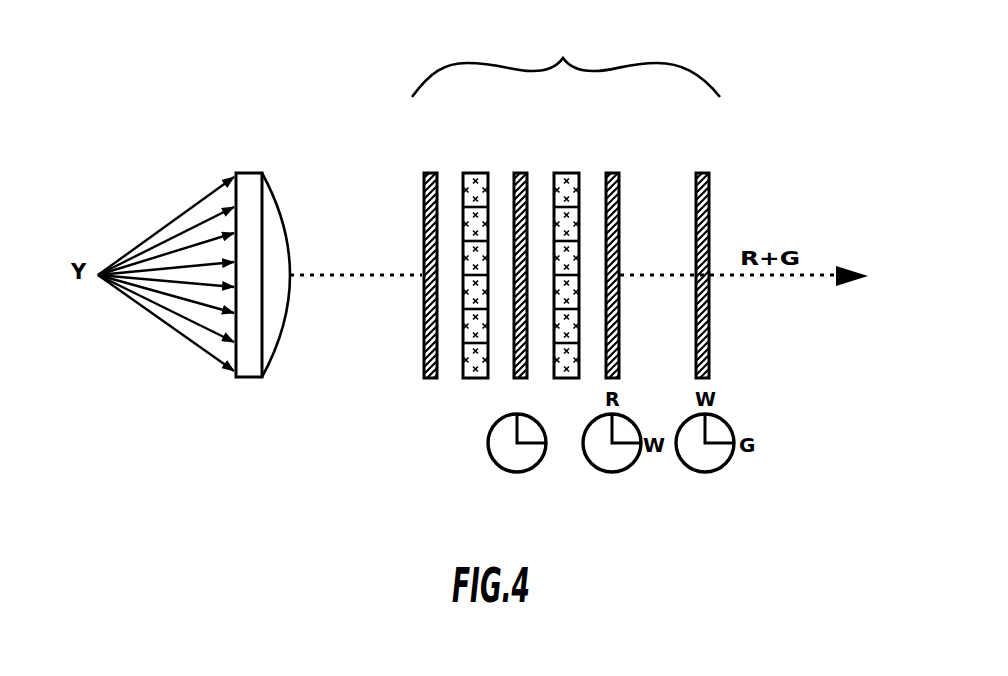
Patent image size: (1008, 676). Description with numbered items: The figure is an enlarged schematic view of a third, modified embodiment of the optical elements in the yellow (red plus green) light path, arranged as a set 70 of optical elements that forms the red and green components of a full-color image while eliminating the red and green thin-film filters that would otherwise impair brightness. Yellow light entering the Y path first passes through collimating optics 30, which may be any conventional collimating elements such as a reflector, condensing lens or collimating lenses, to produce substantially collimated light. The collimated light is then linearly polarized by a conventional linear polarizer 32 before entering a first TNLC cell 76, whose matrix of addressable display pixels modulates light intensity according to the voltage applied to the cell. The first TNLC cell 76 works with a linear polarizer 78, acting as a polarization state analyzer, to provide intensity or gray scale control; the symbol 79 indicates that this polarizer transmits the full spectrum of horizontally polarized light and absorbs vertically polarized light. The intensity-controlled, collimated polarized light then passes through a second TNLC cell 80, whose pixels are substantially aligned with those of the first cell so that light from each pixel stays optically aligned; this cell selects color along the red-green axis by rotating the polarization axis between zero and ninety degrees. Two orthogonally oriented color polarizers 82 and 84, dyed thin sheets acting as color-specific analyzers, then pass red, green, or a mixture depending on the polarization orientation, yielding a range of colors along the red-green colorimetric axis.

The collimating optics 30 is at (250, 172).
The linear polarizer 32 is at (430, 172).
The set of optical elements 70 is at (566, 63).
The first TNLC cell 76 is at (478, 172).
The linear polarizer 78 is at (523, 172).
The symbol 79 is at (492, 440).
The second TNLC cell 80 is at (565, 172).
The first color polarizer 82 is at (613, 172).
The second color polarizer 84 is at (703, 172).